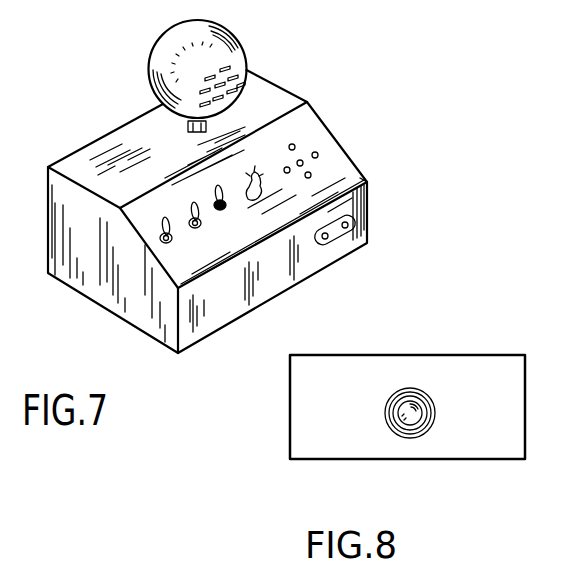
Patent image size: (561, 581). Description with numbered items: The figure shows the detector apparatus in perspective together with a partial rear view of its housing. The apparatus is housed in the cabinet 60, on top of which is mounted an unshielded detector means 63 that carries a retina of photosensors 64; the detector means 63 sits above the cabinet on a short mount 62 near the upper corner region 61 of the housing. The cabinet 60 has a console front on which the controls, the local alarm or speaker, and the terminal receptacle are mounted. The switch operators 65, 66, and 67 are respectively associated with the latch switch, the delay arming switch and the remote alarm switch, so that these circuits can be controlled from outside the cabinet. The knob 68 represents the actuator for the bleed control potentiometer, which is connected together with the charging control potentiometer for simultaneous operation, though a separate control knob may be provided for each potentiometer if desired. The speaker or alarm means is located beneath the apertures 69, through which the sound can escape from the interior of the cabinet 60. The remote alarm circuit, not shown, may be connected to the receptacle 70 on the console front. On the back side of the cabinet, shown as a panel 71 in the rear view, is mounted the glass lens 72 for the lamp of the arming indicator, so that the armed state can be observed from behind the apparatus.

In FIG. 7, the cabinet 60 is at (369, 231).
In FIG. 7, the housing corner edge 61 is at (362, 167).
In FIG. 7, the support post 62 is at (186, 127).
In FIG. 7, the unshielded detector means 63 is at (151, 50).
In FIG. 7, the retina of photosensors 64 is at (246, 62).
In FIG. 7, the switch operator 65 is at (162, 246).
In FIG. 7, the switch operator 66 is at (190, 229).
In FIG. 7, the switch operator 67 is at (218, 209).
In FIG. 7, the knob 68 is at (250, 203).
In FIG. 7, the apertures 69 is at (308, 180).
In FIG. 7, the receptacle 70 is at (324, 242).
In FIG. 8, the panel 71 is at (492, 447).
In FIG. 8, the glass lens 72 is at (396, 420).